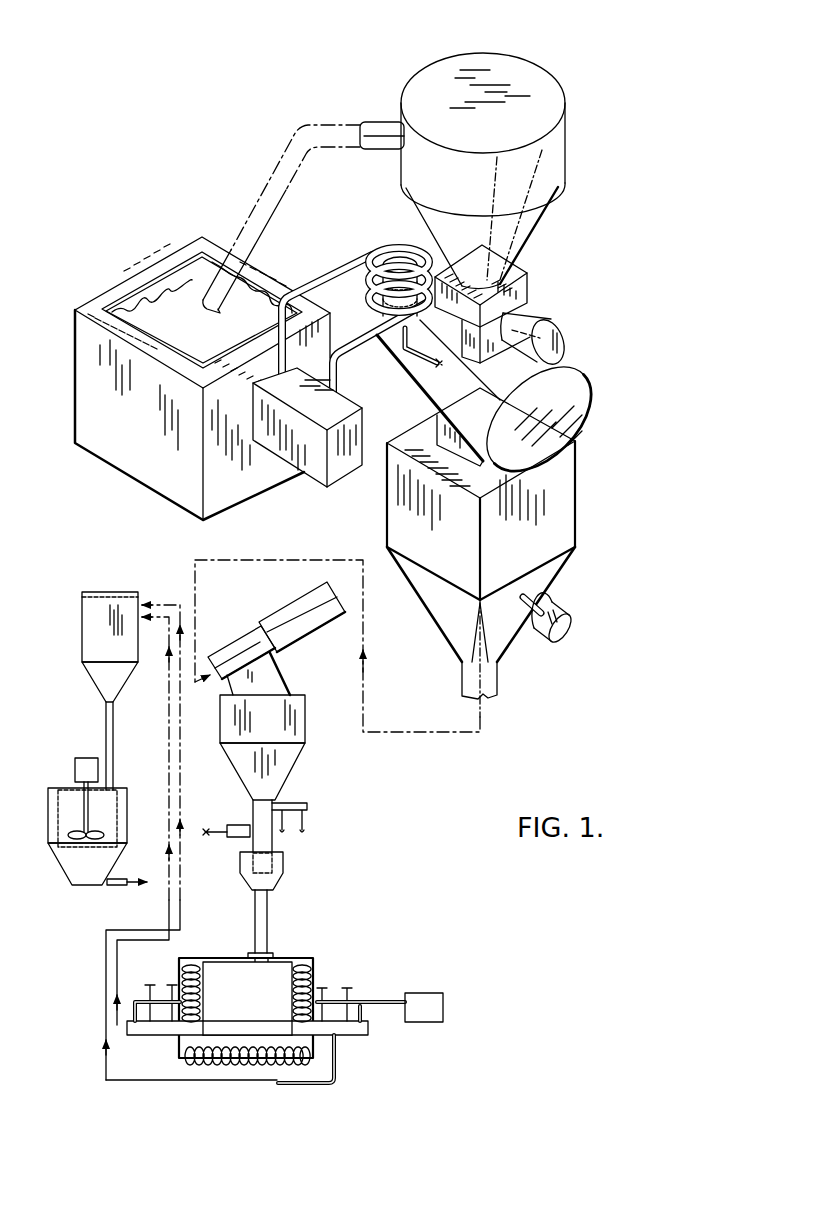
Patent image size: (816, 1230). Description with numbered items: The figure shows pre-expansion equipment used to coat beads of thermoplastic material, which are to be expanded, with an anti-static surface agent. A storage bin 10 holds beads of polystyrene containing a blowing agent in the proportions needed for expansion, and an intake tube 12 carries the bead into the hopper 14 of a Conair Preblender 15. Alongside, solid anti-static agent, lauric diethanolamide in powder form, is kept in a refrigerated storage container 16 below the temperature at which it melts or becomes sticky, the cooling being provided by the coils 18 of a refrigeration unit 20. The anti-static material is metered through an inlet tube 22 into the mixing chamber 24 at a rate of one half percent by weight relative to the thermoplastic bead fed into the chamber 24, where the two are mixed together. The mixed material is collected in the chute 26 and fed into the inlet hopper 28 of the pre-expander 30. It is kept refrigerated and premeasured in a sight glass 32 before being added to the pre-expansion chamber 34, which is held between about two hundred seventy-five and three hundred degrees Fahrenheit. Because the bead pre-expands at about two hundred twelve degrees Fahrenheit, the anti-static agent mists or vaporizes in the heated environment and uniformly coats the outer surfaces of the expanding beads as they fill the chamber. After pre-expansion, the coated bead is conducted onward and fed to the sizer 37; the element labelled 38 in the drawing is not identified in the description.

The storage bin 10 is at (97, 280).
The intake tube 12 is at (283, 125).
The hopper 14 is at (541, 95).
The Conair Preblender 15 is at (602, 153).
The refrigerated storage container 16 is at (400, 267).
The coils 18 is at (372, 268).
The refrigeration unit 20 is at (305, 445).
The inlet tube 22 is at (419, 318).
The mixing chamber 24 is at (568, 413).
The chute 26 is at (567, 513).
The inlet hopper 28 is at (310, 685).
The pre-expander 30 is at (305, 950).
The sight glass 32 is at (240, 880).
The pre-expansion chamber 34 is at (197, 955).
The sizer 37 is at (43, 780).
The storage tank 38 is at (93, 635).